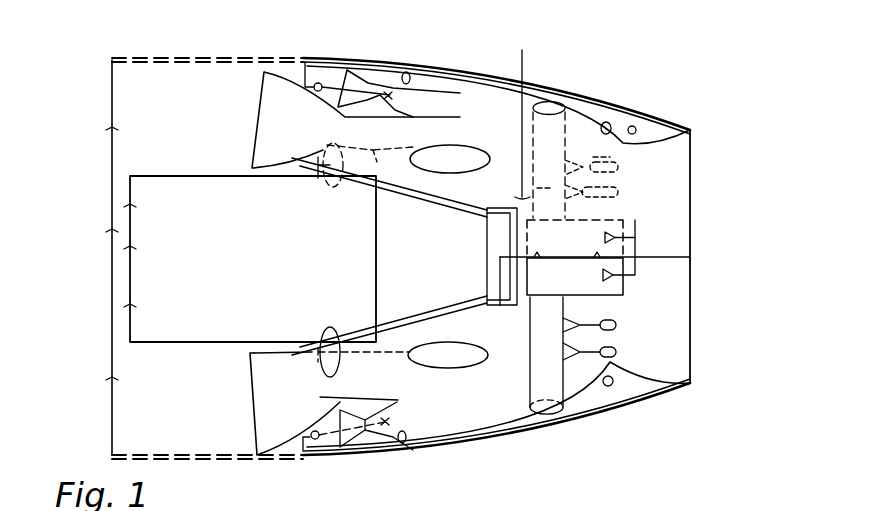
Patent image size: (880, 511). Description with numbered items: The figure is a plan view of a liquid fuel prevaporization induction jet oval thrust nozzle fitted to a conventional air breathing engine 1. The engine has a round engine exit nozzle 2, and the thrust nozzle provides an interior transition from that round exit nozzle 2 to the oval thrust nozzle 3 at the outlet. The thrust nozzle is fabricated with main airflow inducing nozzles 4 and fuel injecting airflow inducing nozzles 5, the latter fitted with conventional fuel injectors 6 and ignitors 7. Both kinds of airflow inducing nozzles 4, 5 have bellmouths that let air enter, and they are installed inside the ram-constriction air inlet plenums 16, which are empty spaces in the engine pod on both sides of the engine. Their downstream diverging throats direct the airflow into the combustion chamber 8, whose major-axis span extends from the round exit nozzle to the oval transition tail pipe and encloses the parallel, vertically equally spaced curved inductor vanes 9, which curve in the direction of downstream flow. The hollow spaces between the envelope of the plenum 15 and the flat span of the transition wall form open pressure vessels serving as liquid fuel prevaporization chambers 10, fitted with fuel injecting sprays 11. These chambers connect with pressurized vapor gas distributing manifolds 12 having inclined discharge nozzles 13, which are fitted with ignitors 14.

The air breathing engine 1 is at (250, 259).
The round engine exit nozzle 2 is at (495, 250).
The oval thrust nozzle 3 is at (693, 317).
The main airflow inducing nozzle 4 is at (275, 72).
The fuel injecting airflow inducing nozzle 5 is at (355, 67).
The fuel injector 6 is at (390, 93).
The ignitor 7 is at (408, 75).
The combustion chamber 8 is at (466, 128).
The inductor vane 9 is at (521, 113).
The liquid fuel prevaporization chamber 10 is at (628, 287).
The fuel injecting spray 11 is at (627, 237).
The pressurized vapor gas distributing manifold 12 is at (551, 103).
The discharge nozzle 13 is at (578, 122).
The ignitor 14 is at (610, 124).
The ram constriction air inlet plenum 15 is at (657, 118).
The ram-constriction air inlet plenum 16 is at (204, 258).